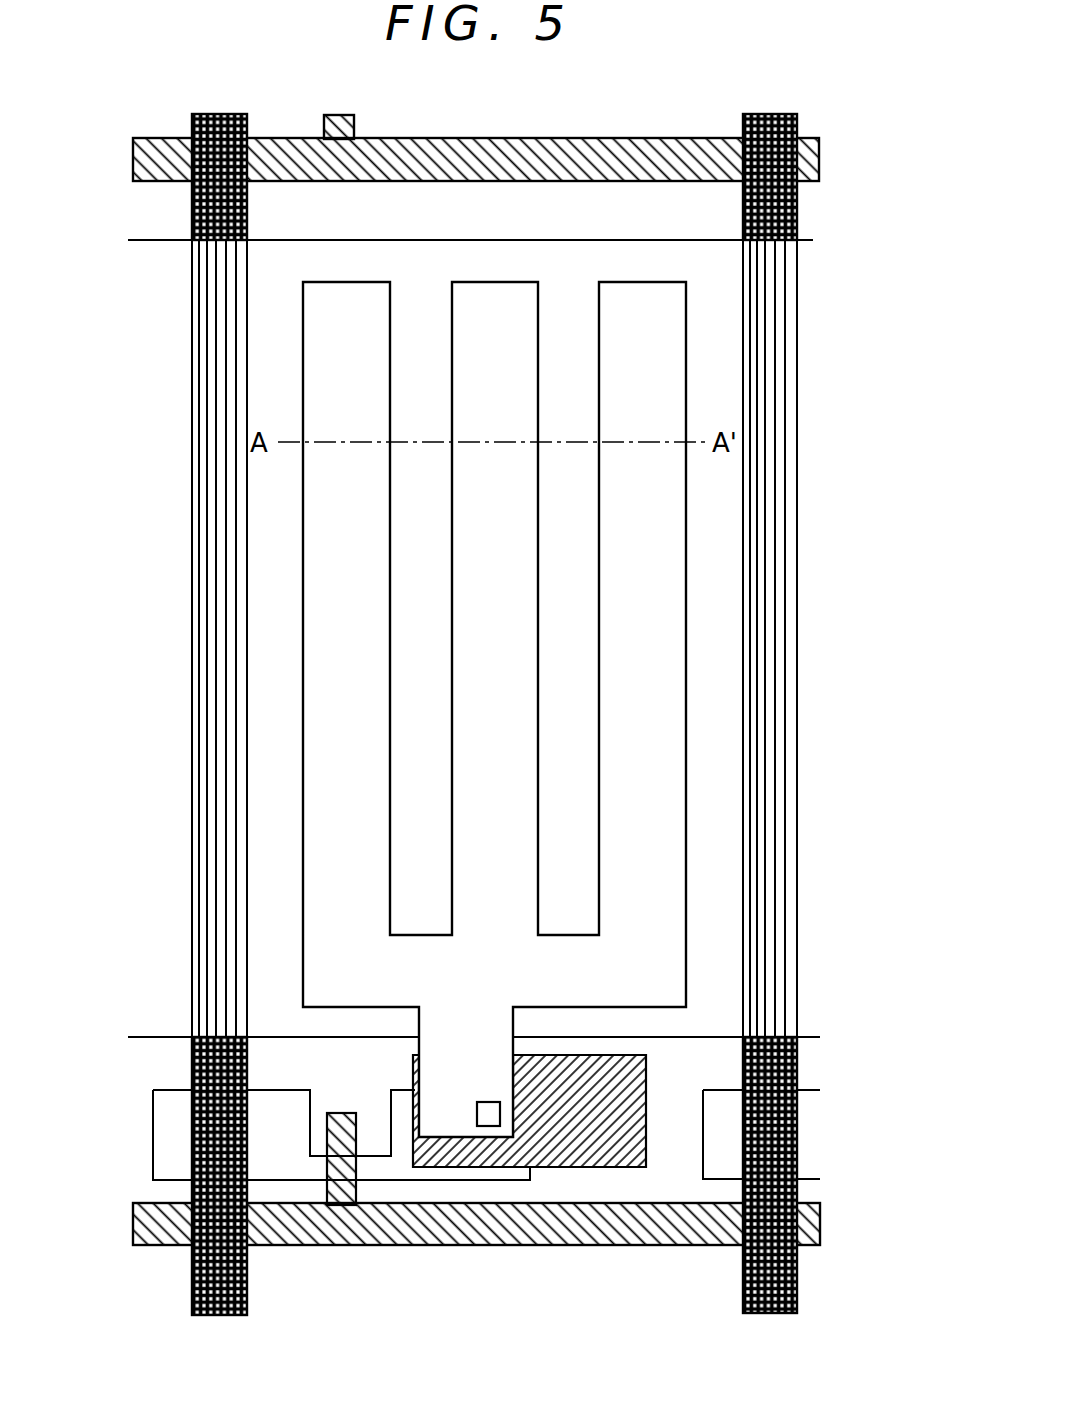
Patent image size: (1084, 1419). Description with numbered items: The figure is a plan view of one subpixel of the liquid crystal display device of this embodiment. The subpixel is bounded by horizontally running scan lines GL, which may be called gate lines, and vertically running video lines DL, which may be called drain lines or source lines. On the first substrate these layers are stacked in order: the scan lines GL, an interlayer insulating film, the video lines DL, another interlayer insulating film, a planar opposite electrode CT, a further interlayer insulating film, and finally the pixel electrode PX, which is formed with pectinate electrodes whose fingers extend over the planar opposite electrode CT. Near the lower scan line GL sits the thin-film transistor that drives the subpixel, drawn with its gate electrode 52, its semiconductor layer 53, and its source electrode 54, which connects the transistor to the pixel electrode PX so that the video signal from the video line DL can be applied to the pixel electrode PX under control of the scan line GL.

The gate electrode 52 is at (343, 1113).
The semiconductor layer 53 is at (180, 1120).
The source electrode 54 is at (517, 1152).
The pixel electrode PX is at (668, 663).
The opposite electrode CT is at (722, 873).
The video line DL is at (247, 1280).
The scan line GL is at (588, 1245).